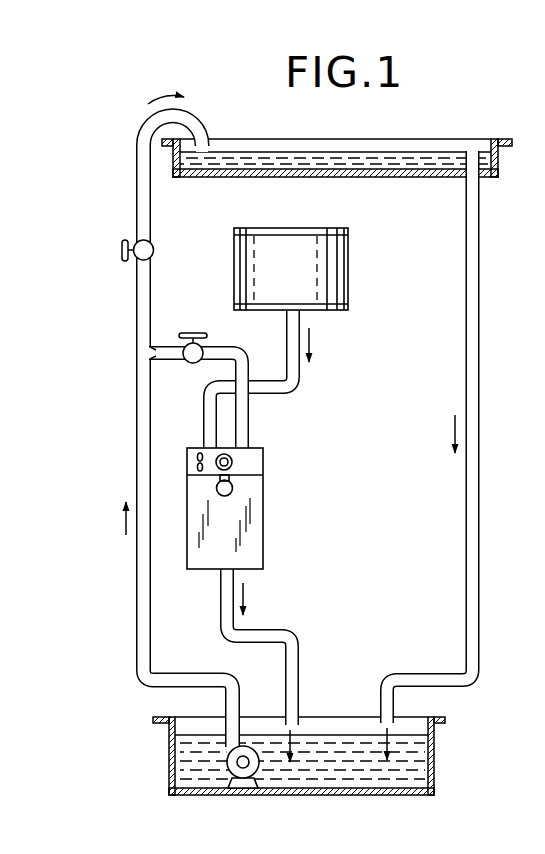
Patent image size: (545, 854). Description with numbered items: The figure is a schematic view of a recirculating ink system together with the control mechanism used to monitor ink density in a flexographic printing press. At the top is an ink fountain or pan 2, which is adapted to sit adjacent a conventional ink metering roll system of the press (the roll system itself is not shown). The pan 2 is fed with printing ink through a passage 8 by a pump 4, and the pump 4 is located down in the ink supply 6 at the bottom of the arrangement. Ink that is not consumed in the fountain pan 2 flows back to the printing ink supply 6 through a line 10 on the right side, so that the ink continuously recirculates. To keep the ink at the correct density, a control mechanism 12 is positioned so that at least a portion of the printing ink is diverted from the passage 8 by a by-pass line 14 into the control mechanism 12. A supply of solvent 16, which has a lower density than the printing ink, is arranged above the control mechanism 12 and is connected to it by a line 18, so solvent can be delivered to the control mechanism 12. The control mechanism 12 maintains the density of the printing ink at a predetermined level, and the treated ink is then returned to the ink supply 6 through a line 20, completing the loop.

The ink fountain or pan 2 is at (455, 143).
The pump 4 is at (243, 772).
The ink supply 6 is at (334, 737).
The passage 8 is at (139, 426).
The line 10 is at (474, 318).
The control mechanism 12 is at (259, 522).
The by-pass line 14 is at (222, 350).
The supply of solvent 16 is at (332, 270).
The line 18 is at (299, 388).
The line 20 is at (290, 636).